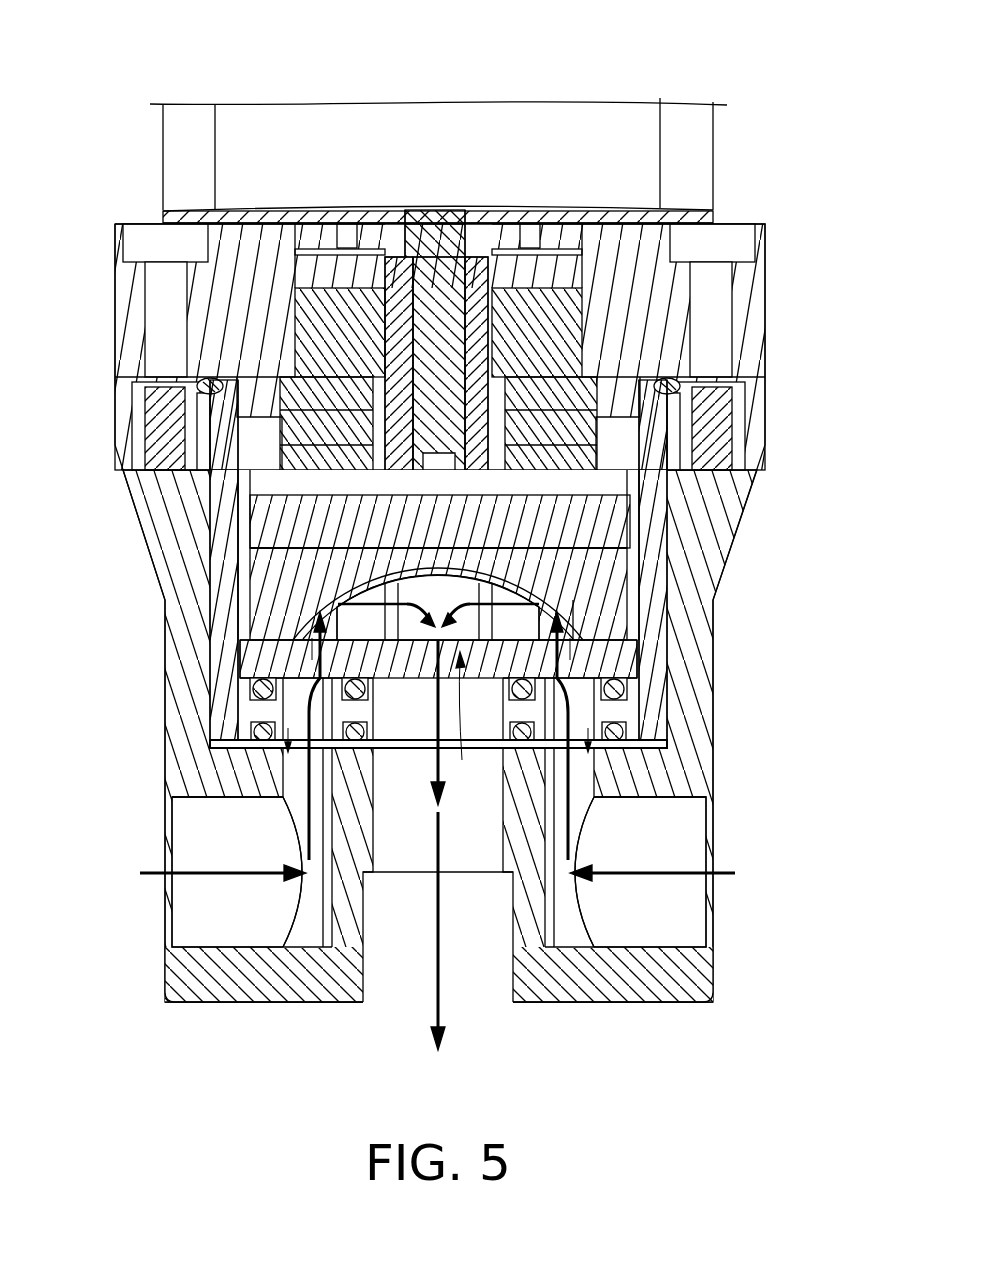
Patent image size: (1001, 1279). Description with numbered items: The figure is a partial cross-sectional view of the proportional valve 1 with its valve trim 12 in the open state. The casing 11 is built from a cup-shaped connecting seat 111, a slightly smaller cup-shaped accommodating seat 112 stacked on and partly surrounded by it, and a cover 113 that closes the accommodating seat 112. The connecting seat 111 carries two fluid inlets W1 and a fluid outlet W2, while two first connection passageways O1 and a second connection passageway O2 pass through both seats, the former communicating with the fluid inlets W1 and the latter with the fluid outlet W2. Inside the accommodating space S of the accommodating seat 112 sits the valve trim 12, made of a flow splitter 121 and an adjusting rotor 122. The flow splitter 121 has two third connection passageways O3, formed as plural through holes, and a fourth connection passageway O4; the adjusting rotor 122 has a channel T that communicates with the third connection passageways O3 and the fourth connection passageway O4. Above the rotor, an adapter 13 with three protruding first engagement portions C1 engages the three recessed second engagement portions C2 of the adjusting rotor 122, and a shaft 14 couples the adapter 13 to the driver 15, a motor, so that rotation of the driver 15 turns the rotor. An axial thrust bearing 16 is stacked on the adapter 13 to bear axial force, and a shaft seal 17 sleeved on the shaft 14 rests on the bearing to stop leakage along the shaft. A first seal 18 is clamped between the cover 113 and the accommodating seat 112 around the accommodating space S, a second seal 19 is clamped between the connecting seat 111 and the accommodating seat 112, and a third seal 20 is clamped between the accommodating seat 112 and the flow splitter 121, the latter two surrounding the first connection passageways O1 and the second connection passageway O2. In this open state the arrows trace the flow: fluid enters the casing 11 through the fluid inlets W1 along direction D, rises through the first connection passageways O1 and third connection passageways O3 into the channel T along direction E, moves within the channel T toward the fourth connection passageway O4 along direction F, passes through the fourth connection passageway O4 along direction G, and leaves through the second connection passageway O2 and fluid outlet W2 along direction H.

The proportional valve 1 is at (64, 34).
The driver 15 is at (242, 157).
The shaft seal 17 is at (325, 300).
The cover 113 is at (126, 317).
The shaft 14 is at (405, 380).
The first seal 18 is at (203, 390).
The axial thrust bearing 16 is at (300, 432).
The casing 11 is at (800, 972).
The connecting seat 111 is at (688, 975).
The accommodating seat 112 is at (620, 512).
The adapter 13 is at (562, 530).
The valve trim 12 is at (555, 613).
The adjusting rotor 122 is at (612, 620).
The flow splitter 121 is at (615, 660).
The third seal 20 is at (605, 692).
The first connection passageways O1 is at (268, 737).
The second seal 19 is at (620, 748).
The accommodating space S is at (656, 460).
The channel T is at (340, 600).
The third connection passageways O3 is at (320, 645).
The first engagement portions C1 is at (560, 548).
The second engagement portions C2 is at (608, 605).
The second connection passageway O2 is at (296, 866).
The fourth connection passageway O4 is at (580, 870).
The direction D is at (435, 876).
The fluid inlets W1 is at (210, 912).
The fluid outlet W2 is at (473, 985).
The direction H is at (427, 845).
The direction G is at (437, 706).
The direction E is at (436, 736).
The direction F is at (438, 678).